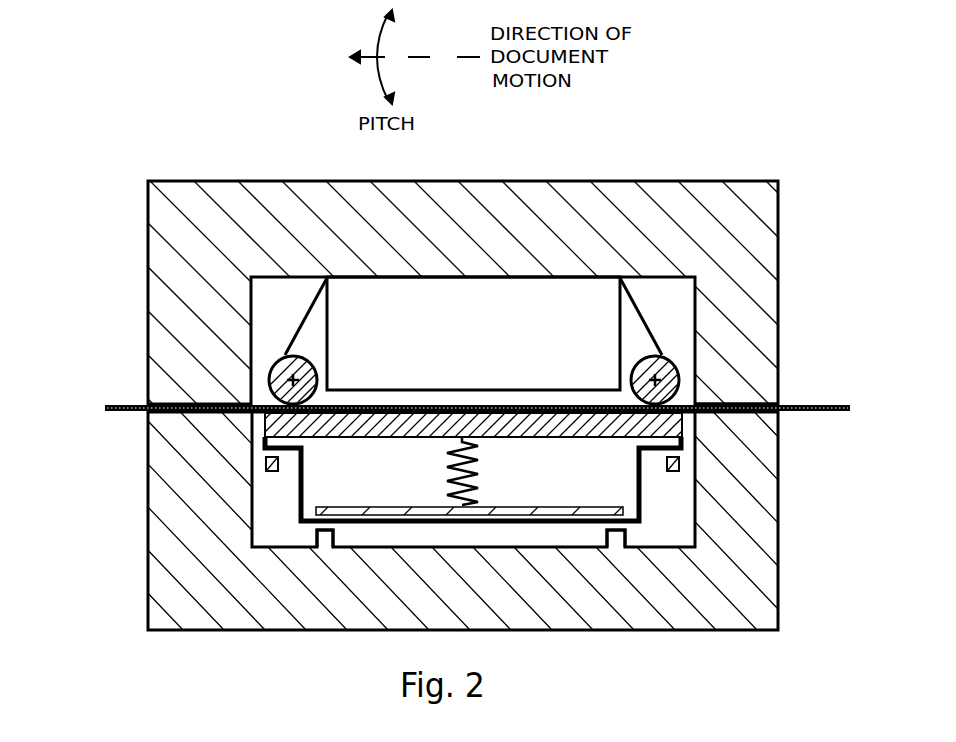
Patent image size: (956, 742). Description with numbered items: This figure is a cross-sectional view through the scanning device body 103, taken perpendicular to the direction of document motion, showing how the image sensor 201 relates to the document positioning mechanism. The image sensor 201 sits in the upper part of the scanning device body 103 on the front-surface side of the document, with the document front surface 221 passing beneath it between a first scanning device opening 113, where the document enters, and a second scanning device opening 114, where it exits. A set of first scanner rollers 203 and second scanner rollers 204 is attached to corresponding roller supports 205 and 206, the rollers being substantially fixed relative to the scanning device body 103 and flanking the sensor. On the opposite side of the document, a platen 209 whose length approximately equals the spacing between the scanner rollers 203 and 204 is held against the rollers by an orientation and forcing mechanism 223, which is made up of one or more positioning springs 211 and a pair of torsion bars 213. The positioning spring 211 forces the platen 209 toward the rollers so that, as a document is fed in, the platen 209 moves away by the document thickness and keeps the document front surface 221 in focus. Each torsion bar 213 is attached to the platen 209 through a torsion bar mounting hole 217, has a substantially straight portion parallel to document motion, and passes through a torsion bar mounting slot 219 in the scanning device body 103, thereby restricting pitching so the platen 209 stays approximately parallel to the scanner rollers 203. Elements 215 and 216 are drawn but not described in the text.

The scanning device body 103 is at (778, 338).
The first scanning device opening 113 is at (781, 400).
The second scanning device opening 114 is at (142, 398).
The image sensor 201 is at (457, 292).
The first scanner rollers 203 is at (674, 366).
The second scanner rollers 204 is at (270, 382).
The roller support 205 is at (632, 320).
The roller support 206 is at (287, 357).
The platen 209 is at (267, 462).
The positioning spring 211 is at (453, 467).
The torsion bar 213 is at (327, 507).
The light source 215 is at (667, 358).
The light guide 216 is at (307, 350).
The torsion bar mounting hole 217 is at (682, 452).
The torsion bar mounting slot 219 is at (625, 529).
The document front surface 221 is at (831, 405).
The orientation and forcing mechanism 223 is at (90, 521).